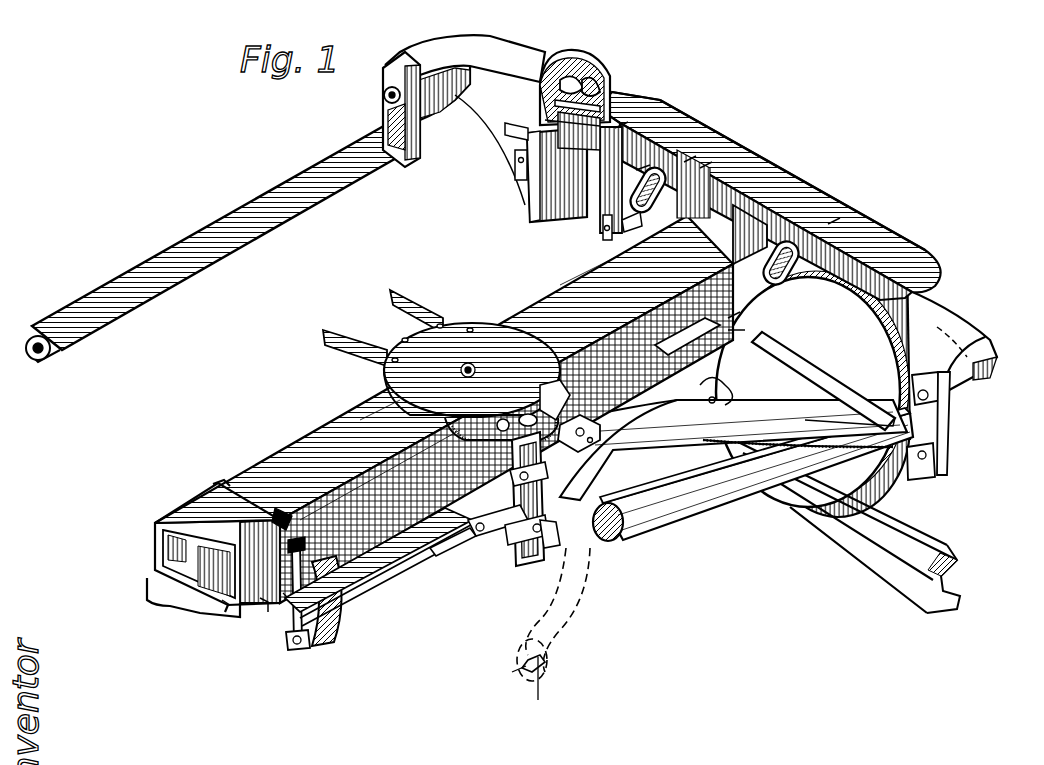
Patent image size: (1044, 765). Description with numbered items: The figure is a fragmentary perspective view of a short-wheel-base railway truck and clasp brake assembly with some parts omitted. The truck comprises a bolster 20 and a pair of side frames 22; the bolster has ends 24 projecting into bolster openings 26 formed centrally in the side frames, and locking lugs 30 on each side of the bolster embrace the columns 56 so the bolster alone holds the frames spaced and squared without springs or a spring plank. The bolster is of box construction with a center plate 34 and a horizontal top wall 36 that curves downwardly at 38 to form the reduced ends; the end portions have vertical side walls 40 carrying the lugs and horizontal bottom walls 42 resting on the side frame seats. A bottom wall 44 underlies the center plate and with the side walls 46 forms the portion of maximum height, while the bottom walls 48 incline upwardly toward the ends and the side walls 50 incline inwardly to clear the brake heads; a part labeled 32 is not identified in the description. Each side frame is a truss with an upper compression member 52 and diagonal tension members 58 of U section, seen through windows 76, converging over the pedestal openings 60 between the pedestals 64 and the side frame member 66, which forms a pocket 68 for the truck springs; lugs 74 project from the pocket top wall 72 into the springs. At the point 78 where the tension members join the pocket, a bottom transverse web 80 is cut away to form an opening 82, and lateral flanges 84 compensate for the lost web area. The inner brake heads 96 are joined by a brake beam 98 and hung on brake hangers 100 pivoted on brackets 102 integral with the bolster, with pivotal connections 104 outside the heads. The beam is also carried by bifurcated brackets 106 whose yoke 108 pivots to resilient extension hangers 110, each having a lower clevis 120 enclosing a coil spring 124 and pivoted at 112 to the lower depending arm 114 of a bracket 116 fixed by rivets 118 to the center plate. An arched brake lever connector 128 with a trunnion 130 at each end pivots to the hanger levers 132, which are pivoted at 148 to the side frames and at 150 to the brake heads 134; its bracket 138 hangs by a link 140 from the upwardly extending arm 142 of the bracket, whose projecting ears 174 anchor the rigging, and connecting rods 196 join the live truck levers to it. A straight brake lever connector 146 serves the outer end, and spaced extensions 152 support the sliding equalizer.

The bolster 20 is at (325, 415).
The side frames 22 is at (896, 232).
The ends 24 is at (196, 500).
The bolster openings 26 is at (707, 140).
The locking lugs 30 is at (148, 548).
The slot 32 is at (754, 300).
The center plate 34 is at (466, 322).
The top wall 36 is at (367, 400).
The downward curve 38 is at (222, 483).
The vertical side walls 40 is at (280, 510).
The horizontal bottom walls 42 is at (262, 598).
The bottom wall 44 is at (458, 540).
The side walls 46 is at (510, 499).
The bottom walls 48 is at (385, 580).
The side walls 50 is at (387, 470).
The upper compression member 52 is at (705, 165).
The columns 56 is at (688, 160).
The diagonal tension members 58 is at (630, 222).
The pedestal openings 60 is at (520, 200).
The pedestals 64 is at (527, 180).
The side frame member 66 is at (620, 125).
The pocket 68 is at (612, 80).
The top wall 72 is at (573, 98).
The lugs 74 is at (588, 92).
The windows 76 is at (655, 150).
The stress point 78 is at (645, 160).
The bottom transverse web 80 is at (560, 103).
The opening 82 is at (590, 128).
The lateral flanges 84 is at (522, 156).
The inner brake heads 96 is at (337, 624).
The brake beam 98 is at (400, 568).
The brake hangers 100 is at (292, 622).
The brackets 102 is at (305, 548).
The pivotal connections 104 is at (297, 652).
The brackets 106 is at (497, 520).
The yoke 108 is at (528, 540).
The resilient extension hangers 110 is at (652, 520).
The pivotal connection 112 is at (682, 507).
The lower depending arm 114 is at (520, 470).
The bracket 116 is at (502, 422).
The rivets 118 is at (527, 415).
The lower clevis 120 is at (578, 563).
The coil spring 124 is at (562, 530).
The brake lever connector 128 is at (757, 427).
The trunnion 130 is at (540, 690).
The hanger levers 132 is at (420, 118).
The brake heads 134 is at (936, 472).
The bracket 138 is at (616, 445).
The link 140 is at (566, 425).
The upwardly extending arm 142 is at (553, 370).
The brake lever connector 146 is at (255, 205).
The pivot 148 is at (985, 333).
The pivot 150 is at (948, 452).
The spaced extensions 152 is at (378, 330).
The projecting ears 174 is at (457, 422).
The connecting rods 196 is at (803, 372).